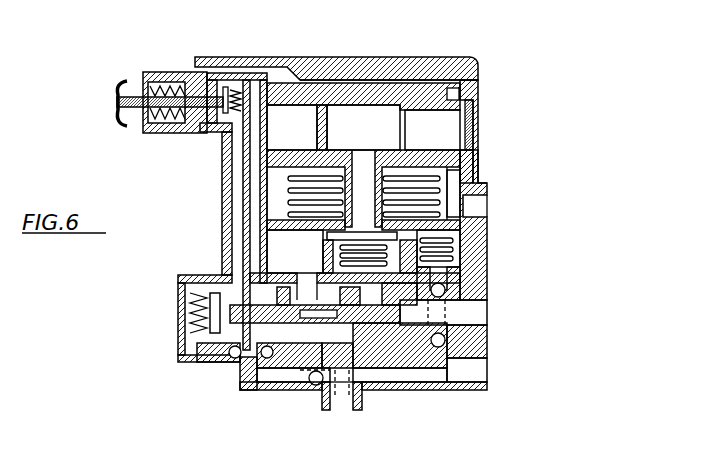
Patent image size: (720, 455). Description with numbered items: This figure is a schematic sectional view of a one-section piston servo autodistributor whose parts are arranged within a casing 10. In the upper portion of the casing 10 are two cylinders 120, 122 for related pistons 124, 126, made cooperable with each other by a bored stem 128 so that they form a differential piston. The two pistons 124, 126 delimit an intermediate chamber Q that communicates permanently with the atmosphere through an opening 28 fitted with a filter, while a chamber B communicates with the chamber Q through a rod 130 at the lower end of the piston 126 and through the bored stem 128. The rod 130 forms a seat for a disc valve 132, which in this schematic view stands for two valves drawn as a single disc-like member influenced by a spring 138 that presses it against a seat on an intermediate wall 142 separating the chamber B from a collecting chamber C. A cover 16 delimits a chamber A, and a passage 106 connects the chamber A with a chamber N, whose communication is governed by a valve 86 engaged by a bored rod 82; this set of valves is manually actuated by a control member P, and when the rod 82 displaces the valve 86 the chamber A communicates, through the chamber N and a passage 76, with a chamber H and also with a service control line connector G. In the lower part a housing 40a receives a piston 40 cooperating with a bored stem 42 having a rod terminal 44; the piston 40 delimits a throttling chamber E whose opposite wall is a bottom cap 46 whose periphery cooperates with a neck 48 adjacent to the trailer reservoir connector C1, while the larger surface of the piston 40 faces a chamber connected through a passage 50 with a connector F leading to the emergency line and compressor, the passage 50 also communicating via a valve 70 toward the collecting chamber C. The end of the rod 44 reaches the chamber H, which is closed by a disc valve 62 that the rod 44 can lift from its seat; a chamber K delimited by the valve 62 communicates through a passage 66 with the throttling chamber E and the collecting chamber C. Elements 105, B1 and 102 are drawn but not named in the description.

The flange 105 is at (128, 86).
The bored rod 82 is at (162, 88).
The valve 86 is at (211, 78).
The passage 106 is at (252, 66).
The intermediate chamber Q is at (296, 110).
The chamber A is at (340, 72).
The cover 16 is at (390, 67).
The piston 124 is at (432, 88).
The cylinder 120 is at (478, 88).
The opening 28 is at (479, 125).
The piston 126 is at (479, 158).
The chamber B is at (462, 182).
The cylinder 122 is at (483, 182).
The trailer brakes port B1 is at (488, 206).
The valve 70 is at (480, 243).
The casing 10 is at (490, 293).
The service control line connector G is at (480, 313).
The connector F is at (480, 369).
The trailer reservoir connector C1 is at (343, 405).
The passage 50 is at (382, 378).
The bored stem 42 is at (400, 330).
The neck 48 is at (315, 387).
The throttling chamber E is at (303, 342).
The housing 40a is at (270, 352).
The passage 66 is at (224, 366).
The rod terminal 44 is at (212, 346).
The chamber K is at (180, 315).
The disc valve 62 is at (184, 288).
The chamber H is at (215, 277).
The collecting chamber C is at (277, 253).
The passage 76 is at (222, 212).
The spring 138 is at (296, 194).
The chamber N is at (199, 140).
The stem 102 is at (136, 122).
The control member P is at (115, 118).
The rod 130 is at (363, 127).
The disc valve 132 is at (357, 230).
The bored stem 128 is at (406, 122).
The intermediate wall 142 is at (300, 251).
The piston 40 is at (284, 283).
The bottom cap 46 is at (343, 332).